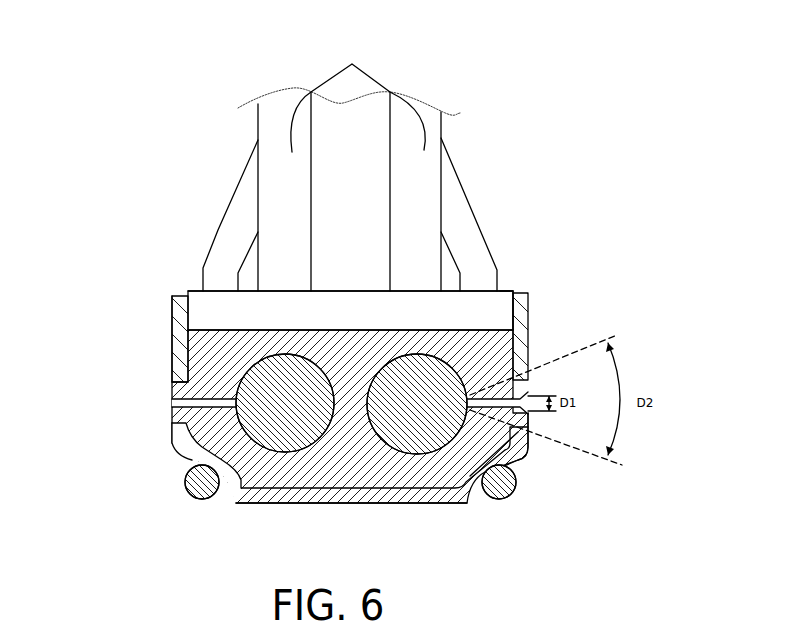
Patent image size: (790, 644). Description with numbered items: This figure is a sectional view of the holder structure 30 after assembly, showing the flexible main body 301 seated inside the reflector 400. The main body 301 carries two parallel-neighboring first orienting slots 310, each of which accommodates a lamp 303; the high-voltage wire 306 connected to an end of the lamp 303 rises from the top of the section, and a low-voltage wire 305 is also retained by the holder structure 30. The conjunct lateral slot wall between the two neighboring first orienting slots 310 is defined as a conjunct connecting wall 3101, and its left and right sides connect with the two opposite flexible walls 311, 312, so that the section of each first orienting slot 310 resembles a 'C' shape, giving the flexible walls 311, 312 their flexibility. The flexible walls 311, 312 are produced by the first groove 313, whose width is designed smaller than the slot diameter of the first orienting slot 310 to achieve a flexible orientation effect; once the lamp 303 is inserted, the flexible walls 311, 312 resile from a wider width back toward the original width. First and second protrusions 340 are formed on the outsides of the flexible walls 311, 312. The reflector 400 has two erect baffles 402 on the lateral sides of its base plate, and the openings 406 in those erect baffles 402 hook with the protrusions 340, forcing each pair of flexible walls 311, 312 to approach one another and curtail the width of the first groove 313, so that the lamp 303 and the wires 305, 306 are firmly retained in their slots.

The holder structure 30 is at (81, 83).
The high-voltage wire 306 is at (349, 162).
The low-voltage wire 305 is at (238, 220).
The erect baffle 402 is at (175, 310).
The main body 301 is at (175, 357).
The opening 406 is at (175, 387).
The reflector 400 is at (172, 443).
The first orienting slot 310 is at (262, 456).
The light device 303 is at (288, 410).
The conjunct connecting wall 3101 is at (355, 447).
The flexible wall 312 is at (518, 454).
The first protrusion 340 is at (529, 392).
The flexible wall 311 is at (508, 290).
The first groove 313 is at (539, 392).